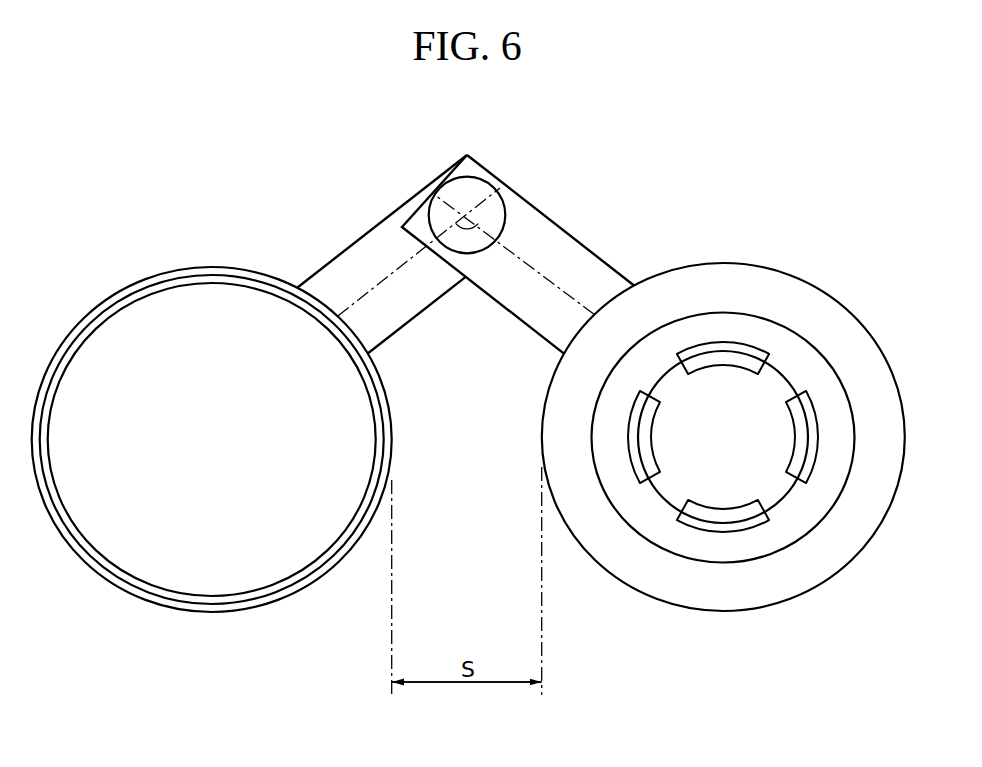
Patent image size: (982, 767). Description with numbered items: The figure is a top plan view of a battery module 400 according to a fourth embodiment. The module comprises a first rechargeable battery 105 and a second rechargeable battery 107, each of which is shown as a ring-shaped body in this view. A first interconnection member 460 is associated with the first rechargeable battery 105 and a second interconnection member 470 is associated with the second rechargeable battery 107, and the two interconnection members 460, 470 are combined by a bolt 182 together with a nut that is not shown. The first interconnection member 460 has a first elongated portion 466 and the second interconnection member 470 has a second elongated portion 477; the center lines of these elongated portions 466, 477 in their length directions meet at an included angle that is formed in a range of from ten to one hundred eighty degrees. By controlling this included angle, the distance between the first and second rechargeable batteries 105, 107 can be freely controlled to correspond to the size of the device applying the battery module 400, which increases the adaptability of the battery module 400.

The battery module 400 is at (447, 120).
The bolt 182 is at (482, 190).
The second elongated portion 477 is at (358, 252).
The first elongated portion 466 is at (570, 248).
The second rechargeable battery 107 is at (157, 270).
The second interconnection member 470 is at (90, 308).
The first rechargeable battery 105 is at (723, 387).
The first interconnection member 460 is at (800, 278).